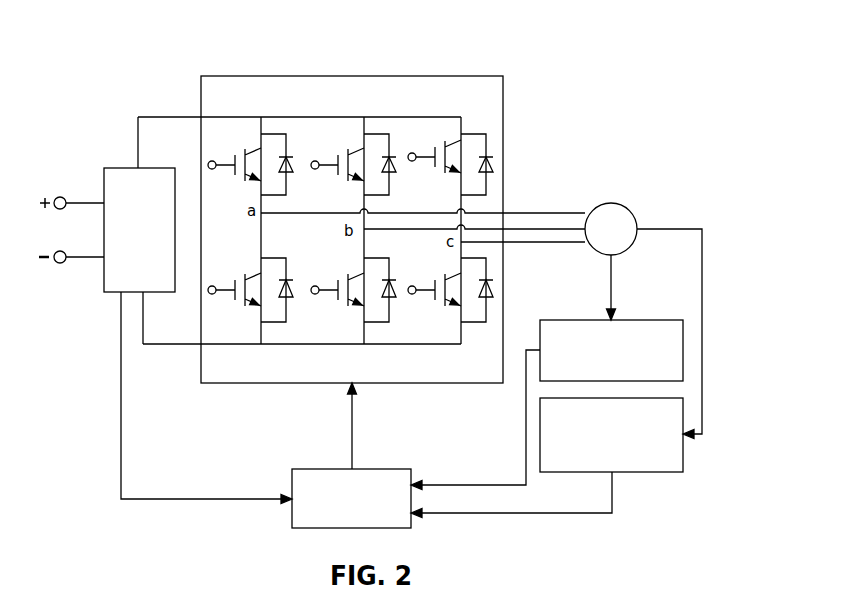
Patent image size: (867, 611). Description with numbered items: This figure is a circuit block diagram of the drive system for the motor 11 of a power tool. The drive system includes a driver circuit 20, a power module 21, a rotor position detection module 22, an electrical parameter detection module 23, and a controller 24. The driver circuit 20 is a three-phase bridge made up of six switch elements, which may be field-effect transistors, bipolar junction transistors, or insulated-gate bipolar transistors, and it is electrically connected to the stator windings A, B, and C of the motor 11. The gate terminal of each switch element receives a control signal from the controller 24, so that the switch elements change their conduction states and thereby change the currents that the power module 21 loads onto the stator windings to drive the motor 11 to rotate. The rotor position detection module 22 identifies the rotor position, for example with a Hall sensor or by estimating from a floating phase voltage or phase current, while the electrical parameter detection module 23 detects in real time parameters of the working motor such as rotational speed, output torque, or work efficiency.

The motor 11 is at (613, 203).
The driver circuit 20 is at (350, 76).
The power module 21 is at (104, 175).
The rotor position detection module 22 is at (637, 320).
The electrical parameter detection module 23 is at (648, 472).
The controller 24 is at (377, 469).